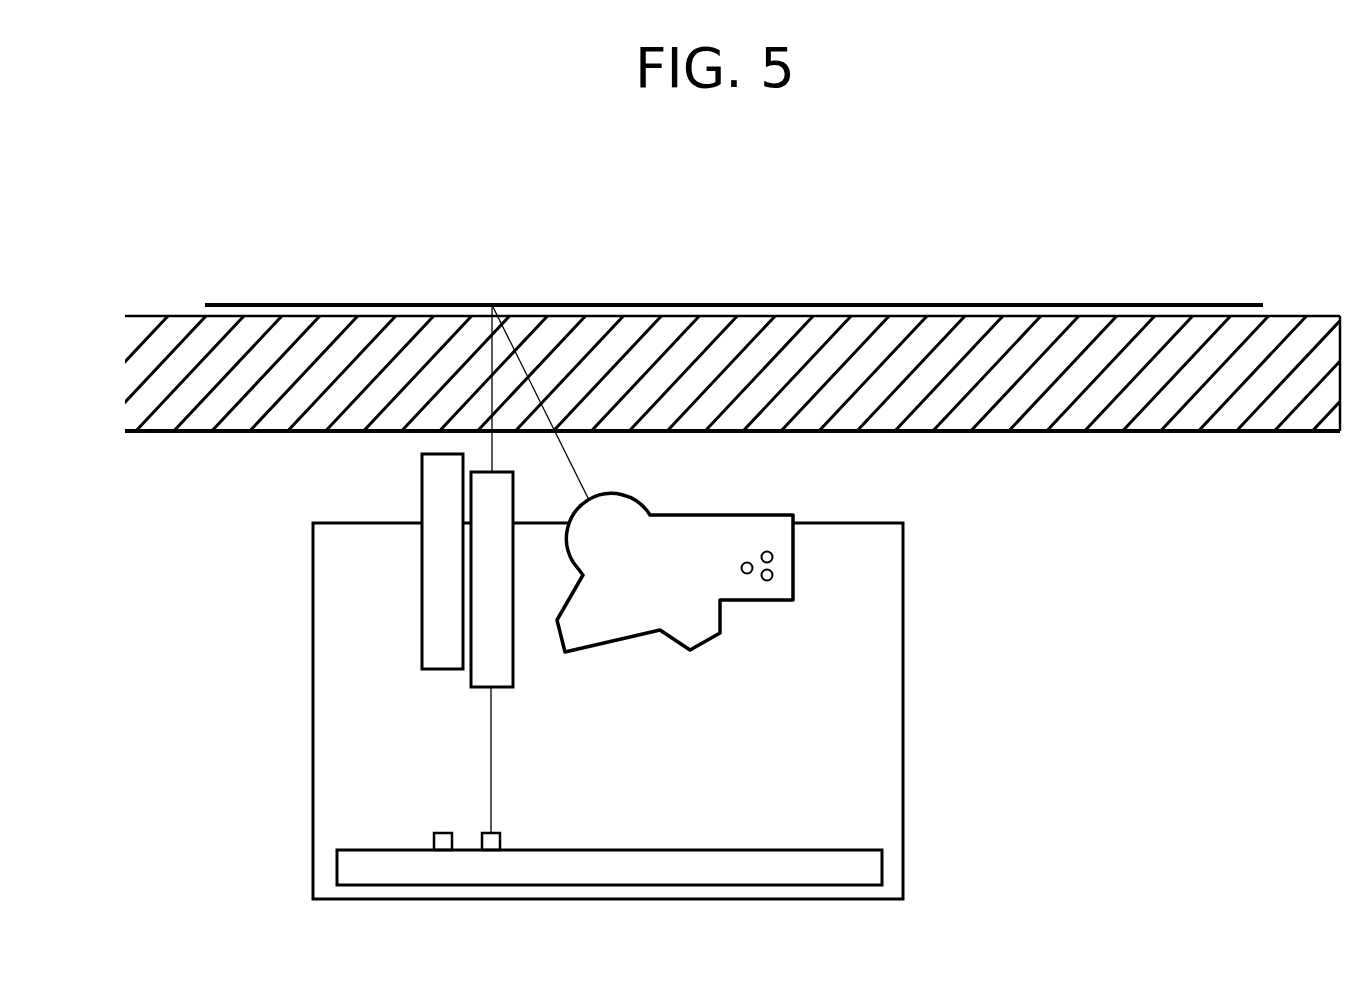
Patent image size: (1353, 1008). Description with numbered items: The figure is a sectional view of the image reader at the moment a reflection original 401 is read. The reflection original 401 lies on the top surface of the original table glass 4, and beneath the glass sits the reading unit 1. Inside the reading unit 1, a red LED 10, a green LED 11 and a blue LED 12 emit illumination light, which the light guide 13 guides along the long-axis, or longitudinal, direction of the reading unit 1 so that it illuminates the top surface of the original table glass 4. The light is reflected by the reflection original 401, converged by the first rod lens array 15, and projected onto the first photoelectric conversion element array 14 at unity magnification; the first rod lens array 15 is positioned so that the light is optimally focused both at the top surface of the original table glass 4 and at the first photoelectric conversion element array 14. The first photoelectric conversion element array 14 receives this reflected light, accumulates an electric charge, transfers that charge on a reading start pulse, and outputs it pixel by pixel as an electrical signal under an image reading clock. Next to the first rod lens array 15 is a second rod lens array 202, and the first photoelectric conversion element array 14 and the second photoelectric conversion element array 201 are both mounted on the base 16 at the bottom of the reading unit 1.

The reading unit 1 is at (313, 707).
The original table glass 4 is at (180, 332).
The reflection original 401 is at (805, 302).
The red LED 10 is at (767, 551).
The green LED 11 is at (773, 575).
The blue LED 12 is at (746, 562).
The light guide 13 is at (707, 642).
The first photoelectric conversion element array 14 is at (500, 845).
The first rod lens array 15 is at (483, 688).
The base 16 is at (806, 849).
The second photoelectric conversion element array 201 is at (433, 845).
The second rod lens array 202 is at (421, 575).